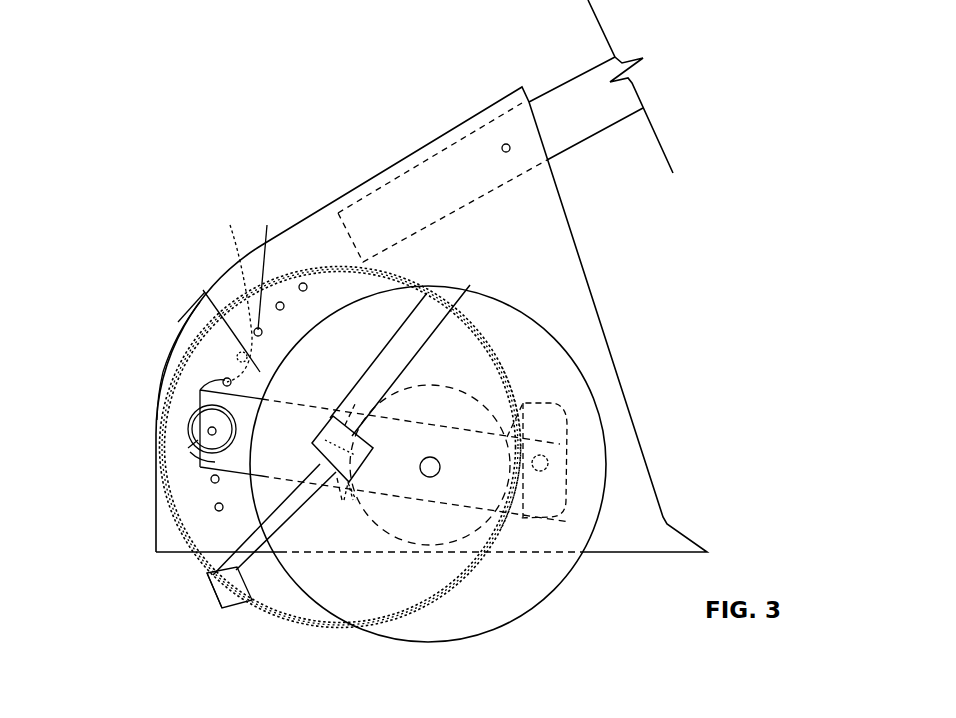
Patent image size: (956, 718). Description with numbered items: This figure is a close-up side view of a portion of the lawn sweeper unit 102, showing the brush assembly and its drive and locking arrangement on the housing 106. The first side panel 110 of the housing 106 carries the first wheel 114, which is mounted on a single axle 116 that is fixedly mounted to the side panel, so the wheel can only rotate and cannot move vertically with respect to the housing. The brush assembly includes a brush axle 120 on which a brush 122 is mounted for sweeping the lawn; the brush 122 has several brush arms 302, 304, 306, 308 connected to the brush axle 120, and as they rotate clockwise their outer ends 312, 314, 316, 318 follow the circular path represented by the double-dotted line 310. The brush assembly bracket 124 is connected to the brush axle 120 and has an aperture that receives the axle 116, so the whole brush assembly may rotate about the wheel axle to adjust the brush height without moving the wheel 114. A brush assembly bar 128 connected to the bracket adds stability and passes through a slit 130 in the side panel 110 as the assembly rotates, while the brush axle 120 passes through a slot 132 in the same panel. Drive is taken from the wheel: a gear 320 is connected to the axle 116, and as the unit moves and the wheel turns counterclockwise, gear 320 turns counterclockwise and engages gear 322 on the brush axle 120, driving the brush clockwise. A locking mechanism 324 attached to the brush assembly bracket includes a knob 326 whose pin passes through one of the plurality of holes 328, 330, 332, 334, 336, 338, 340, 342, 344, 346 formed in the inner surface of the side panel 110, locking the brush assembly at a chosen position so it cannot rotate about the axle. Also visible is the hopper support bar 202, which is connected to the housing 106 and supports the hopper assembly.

The lawn sweeper unit 102 is at (277, 125).
The housing 106 is at (268, 240).
The first side panel 110 is at (317, 230).
The first wheel 114 is at (557, 587).
The axle 116 is at (437, 462).
The brush axle 120 is at (358, 382).
The brush 122 is at (207, 575).
The brush assembly bracket 124 is at (188, 448).
The brush assembly bar 128 is at (572, 460).
The slit 130 is at (556, 425).
The slot 132 is at (350, 498).
The hopper support bar 202 is at (560, 113).
The brush arm 302 is at (255, 600).
The brush arm 304 is at (205, 292).
The brush arm 306 is at (408, 323).
The brush arm 308 is at (492, 543).
The double-dotted line 310 is at (165, 375).
The outer end 312 is at (233, 597).
The outer end 314 is at (172, 343).
The outer end 316 is at (432, 312).
The outer end 318 is at (478, 560).
The gear 320 is at (424, 385).
The gear 322 is at (337, 432).
The locking mechanism 324 is at (190, 414).
The knob 326 is at (200, 455).
The hole 328 is at (218, 511).
The hole 330 is at (213, 483).
The hole 332 is at (246, 464).
The hole 334 is at (193, 428).
The hole 336 is at (198, 396).
The hole 338 is at (240, 292).
The hole 340 is at (215, 300).
The hole 342 is at (242, 260).
The hole 344 is at (285, 308).
The rod 346 is at (303, 245).